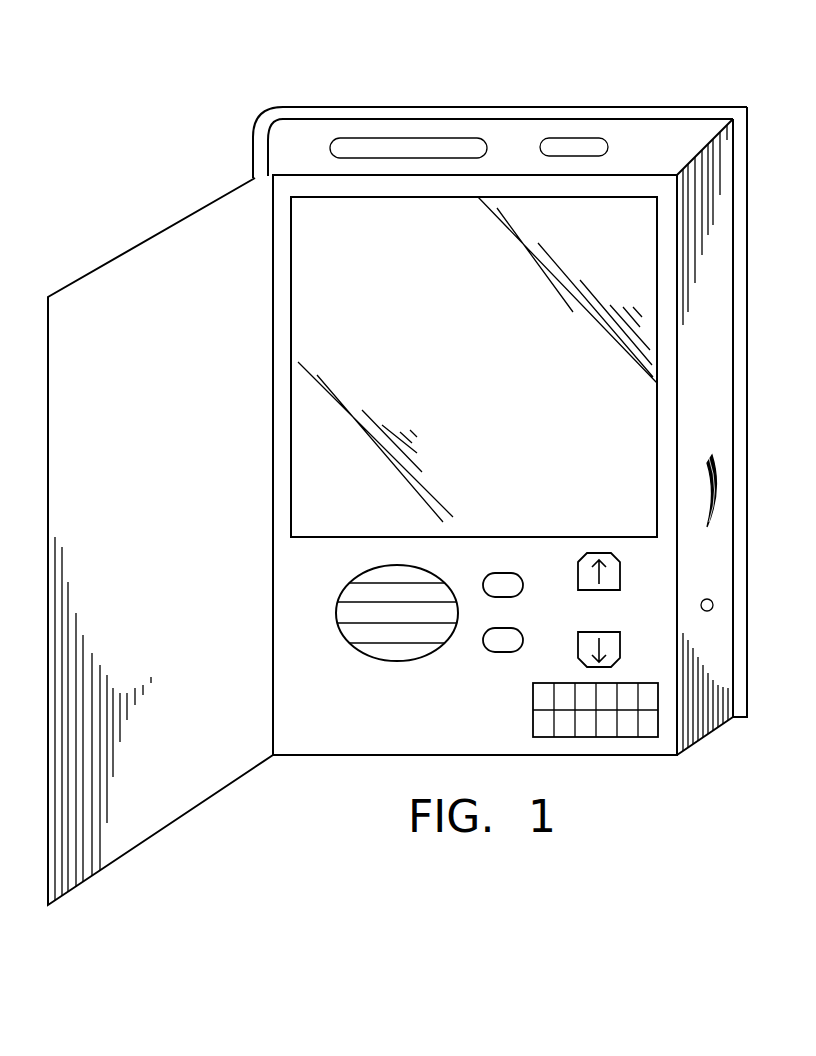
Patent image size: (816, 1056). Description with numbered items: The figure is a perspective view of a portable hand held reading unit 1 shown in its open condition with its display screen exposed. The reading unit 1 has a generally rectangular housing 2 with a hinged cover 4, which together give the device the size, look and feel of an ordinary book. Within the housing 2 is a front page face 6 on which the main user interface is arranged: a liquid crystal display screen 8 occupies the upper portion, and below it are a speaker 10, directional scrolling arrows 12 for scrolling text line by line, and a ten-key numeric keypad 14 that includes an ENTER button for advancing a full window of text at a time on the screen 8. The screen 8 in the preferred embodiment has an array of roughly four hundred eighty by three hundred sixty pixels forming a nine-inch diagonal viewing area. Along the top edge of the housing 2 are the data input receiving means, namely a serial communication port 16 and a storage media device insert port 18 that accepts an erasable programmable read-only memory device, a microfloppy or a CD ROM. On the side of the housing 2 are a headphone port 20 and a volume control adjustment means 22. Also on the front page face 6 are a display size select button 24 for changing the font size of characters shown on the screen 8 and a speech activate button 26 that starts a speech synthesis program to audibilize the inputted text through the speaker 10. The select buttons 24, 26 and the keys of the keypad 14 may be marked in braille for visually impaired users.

The portable hand held reading unit 1 is at (508, 76).
The housing 2 is at (663, 82).
The hinged cover 4 is at (200, 212).
The front page face 6 is at (322, 735).
The liquid crystal display screen 8 is at (503, 294).
The speaker 10 is at (339, 598).
The directional scrolling arrows 12 is at (620, 573).
The ten-key numeric keypad 14 is at (533, 703).
The serial communication port 16 is at (575, 147).
The storage media device insert port 18 is at (415, 148).
The headphone port 20 is at (705, 599).
The volume control adjustment means 22 is at (713, 460).
The display size select button 24 is at (497, 575).
The speech activate button 26 is at (497, 630).